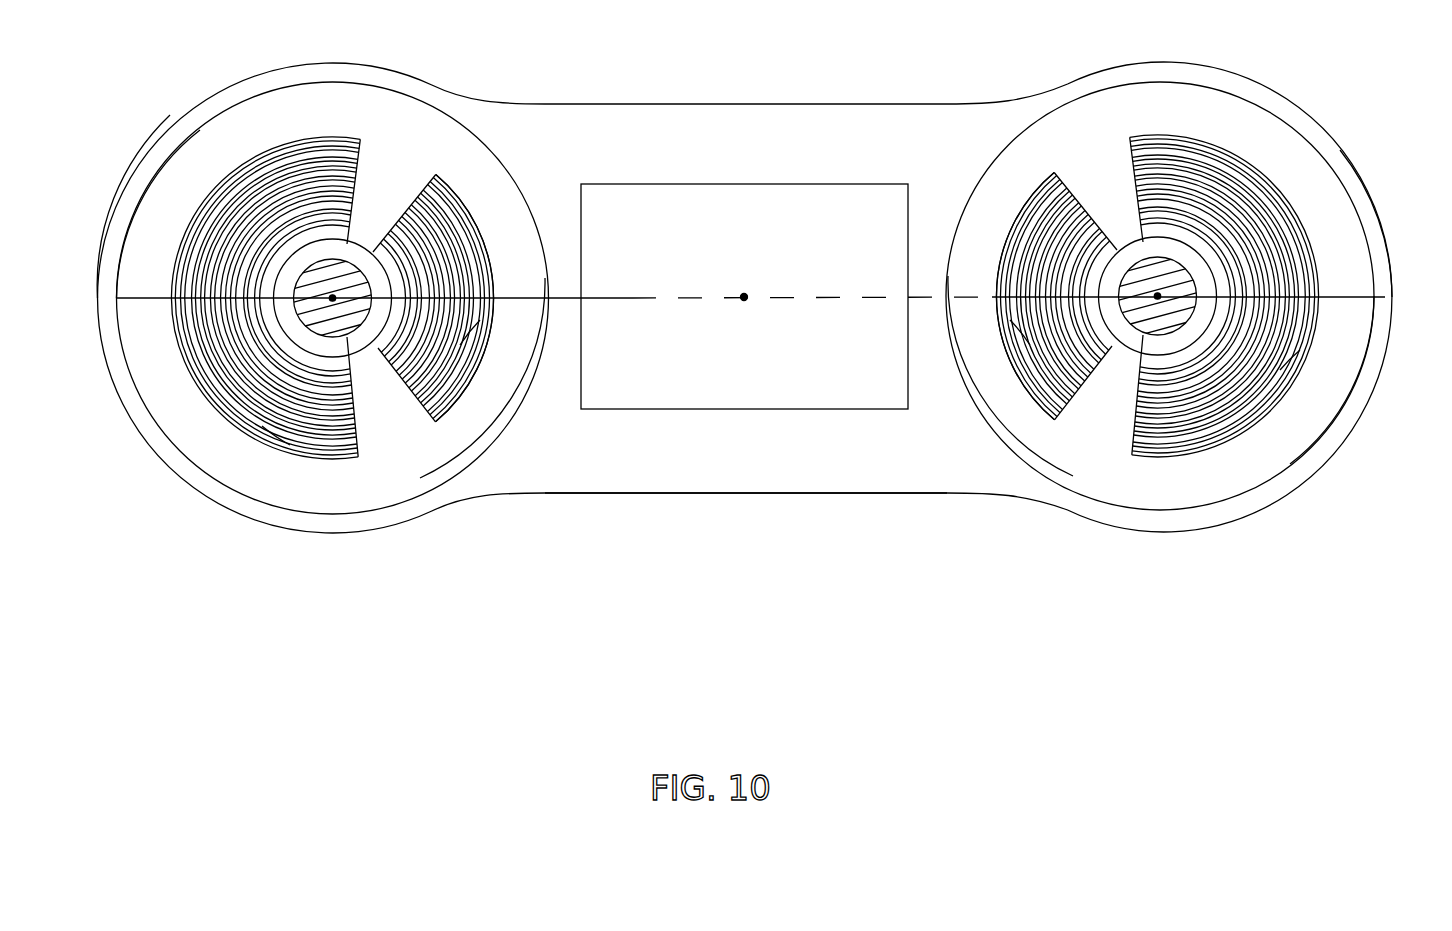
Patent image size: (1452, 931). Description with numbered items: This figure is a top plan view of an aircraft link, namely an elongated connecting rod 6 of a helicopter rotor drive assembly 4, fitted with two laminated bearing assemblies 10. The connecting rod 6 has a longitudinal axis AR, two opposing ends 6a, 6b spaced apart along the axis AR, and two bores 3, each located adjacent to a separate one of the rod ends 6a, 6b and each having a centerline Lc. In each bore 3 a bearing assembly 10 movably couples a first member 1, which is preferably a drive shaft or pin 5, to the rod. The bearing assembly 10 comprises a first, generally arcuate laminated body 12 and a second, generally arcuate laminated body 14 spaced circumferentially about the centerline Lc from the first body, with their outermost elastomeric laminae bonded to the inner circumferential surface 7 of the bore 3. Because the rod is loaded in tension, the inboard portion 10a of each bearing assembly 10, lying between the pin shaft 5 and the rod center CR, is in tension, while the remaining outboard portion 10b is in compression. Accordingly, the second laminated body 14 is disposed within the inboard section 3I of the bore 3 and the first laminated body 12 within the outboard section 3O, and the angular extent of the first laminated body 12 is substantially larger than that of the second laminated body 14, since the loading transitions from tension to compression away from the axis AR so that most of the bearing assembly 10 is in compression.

The laminated bearing assembly 10 is at (309, 96).
The inboard portion 10a is at (487, 418).
The outboard portion 10b is at (164, 369).
The connecting rod 6 is at (774, 490).
The first rod end 6a is at (136, 186).
The second rod end 6b is at (1383, 249).
The first laminated body 12 is at (198, 401).
The second laminated body 14 is at (482, 226).
The bore 3 is at (391, 432).
The inboard bore section 3I is at (484, 350).
The outboard bore section 3O is at (1316, 368).
The drive shaft or pin 5 is at (357, 320).
The first member 1 is at (351, 341).
The bore centerline Lc is at (333, 298).
The inner circumferential surface 7 is at (744, 296).
The rod center CR is at (744, 297).
The longitudinal axis of connecting rod AR is at (630, 298).
The helicopter rotor drive assembly 4 is at (960, 616).